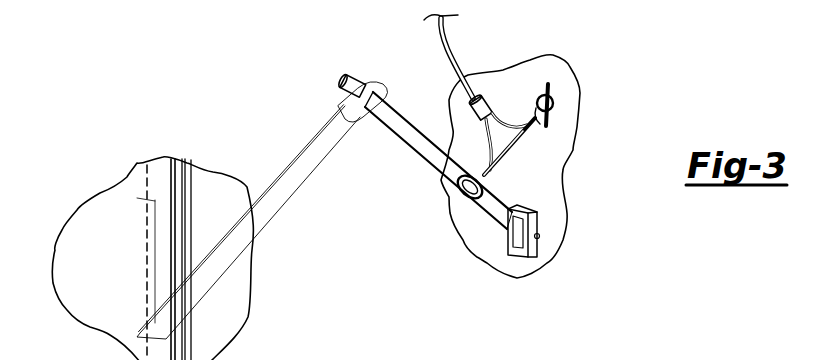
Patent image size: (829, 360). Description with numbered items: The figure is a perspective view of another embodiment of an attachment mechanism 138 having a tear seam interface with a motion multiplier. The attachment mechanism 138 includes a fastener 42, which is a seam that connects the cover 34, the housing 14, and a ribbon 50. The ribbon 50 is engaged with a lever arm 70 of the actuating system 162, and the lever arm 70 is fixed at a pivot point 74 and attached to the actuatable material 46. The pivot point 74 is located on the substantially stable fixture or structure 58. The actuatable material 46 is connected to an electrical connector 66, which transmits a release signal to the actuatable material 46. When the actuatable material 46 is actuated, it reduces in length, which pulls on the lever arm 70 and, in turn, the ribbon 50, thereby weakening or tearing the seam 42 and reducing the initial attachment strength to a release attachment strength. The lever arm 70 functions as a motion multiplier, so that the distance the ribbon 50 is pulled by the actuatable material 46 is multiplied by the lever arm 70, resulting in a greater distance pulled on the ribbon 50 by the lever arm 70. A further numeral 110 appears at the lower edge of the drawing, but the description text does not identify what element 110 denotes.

The housing 14 is at (236, 193).
The cover 34 is at (72, 230).
The fastener 42 is at (145, 174).
The actuatable material 46 is at (513, 159).
The ribbon 50 is at (250, 231).
The substantially stable fixture or structure 58 is at (537, 182).
The electrical connector 66 is at (448, 41).
The lever arm 70 is at (342, 82).
The pivot point 74 is at (540, 236).
The base member 110 is at (385, 355).
The attachment mechanism 138 is at (243, 83).
The actuating system 162 is at (391, 184).